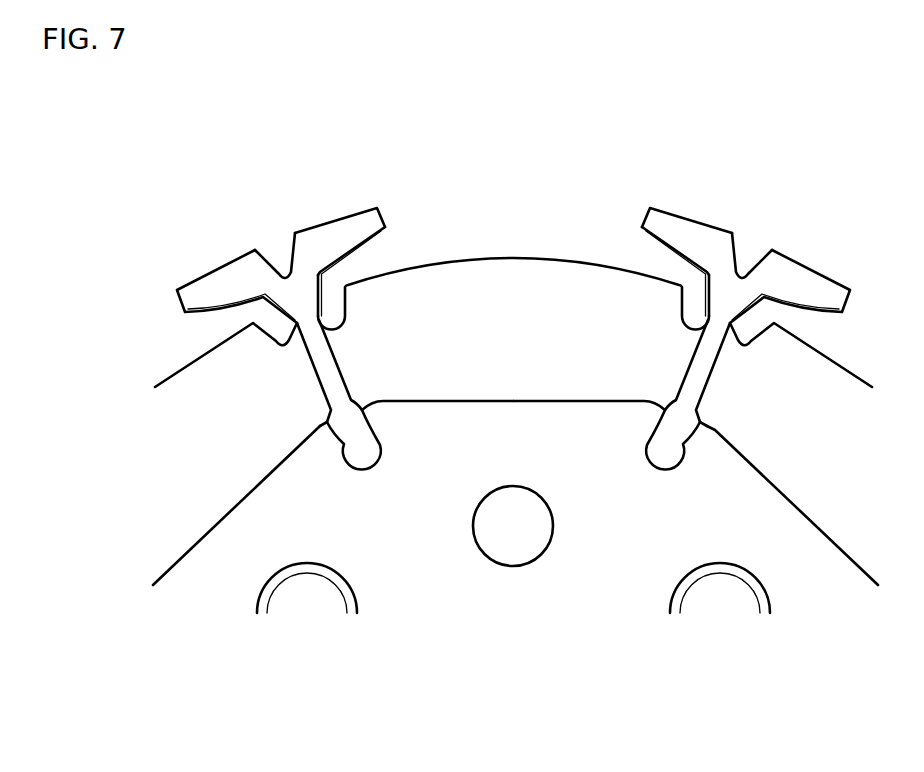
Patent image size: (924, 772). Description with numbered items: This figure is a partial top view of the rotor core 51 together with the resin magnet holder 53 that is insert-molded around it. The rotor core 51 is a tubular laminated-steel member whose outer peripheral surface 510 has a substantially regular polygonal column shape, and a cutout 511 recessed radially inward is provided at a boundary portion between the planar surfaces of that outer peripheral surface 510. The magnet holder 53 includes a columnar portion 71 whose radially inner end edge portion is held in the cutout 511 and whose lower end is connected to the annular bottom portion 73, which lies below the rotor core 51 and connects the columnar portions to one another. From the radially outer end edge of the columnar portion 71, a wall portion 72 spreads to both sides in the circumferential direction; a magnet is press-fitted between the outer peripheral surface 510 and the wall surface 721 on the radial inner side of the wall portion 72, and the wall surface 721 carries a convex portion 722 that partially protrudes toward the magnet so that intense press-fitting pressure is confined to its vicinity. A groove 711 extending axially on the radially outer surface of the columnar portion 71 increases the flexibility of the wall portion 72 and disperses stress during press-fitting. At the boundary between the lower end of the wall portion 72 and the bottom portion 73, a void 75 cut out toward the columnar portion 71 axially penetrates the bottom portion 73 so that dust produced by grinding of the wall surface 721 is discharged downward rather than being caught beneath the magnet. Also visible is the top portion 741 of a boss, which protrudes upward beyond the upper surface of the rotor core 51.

The magnet holder 53 is at (516, 262).
The rotor core 51 is at (518, 590).
The outer peripheral surface 510 is at (232, 508).
The cutout 511 is at (362, 459).
The columnar portion 71 is at (326, 366).
The groove 711 is at (272, 252).
The wall portion 72 is at (362, 224).
The wall surface 721 is at (376, 237).
The convex portion 722 is at (375, 253).
The bottom portion 73 is at (513, 300).
The top portion 741 is at (310, 597).
The void 75 is at (346, 263).